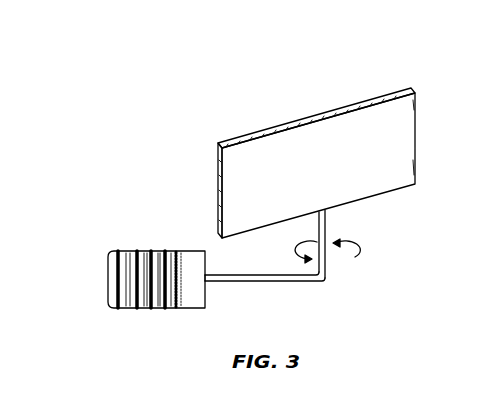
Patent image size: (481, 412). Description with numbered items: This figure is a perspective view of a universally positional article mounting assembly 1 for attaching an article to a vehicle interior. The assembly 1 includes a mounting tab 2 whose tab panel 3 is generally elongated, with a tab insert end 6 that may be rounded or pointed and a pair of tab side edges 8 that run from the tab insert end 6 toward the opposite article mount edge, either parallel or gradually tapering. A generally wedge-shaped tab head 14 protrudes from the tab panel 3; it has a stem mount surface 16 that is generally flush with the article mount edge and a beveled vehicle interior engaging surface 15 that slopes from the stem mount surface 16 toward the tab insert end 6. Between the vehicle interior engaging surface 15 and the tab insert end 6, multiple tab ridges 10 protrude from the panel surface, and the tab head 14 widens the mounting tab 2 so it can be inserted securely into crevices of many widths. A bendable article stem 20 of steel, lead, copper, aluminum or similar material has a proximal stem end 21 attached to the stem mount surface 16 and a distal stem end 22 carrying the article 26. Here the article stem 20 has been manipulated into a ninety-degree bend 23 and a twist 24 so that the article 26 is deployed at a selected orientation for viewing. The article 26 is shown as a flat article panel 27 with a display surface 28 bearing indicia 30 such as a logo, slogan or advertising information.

The assembly 1 is at (207, 78).
The mounting tab 2 is at (142, 250).
The tab panel 3 is at (118, 308).
The tab insert end 6 is at (108, 278).
The tab side edges 8 is at (163, 250).
The tab ridges 10 is at (128, 252).
The tab head 14 is at (180, 308).
The vehicle interior engaging surface 15 is at (190, 272).
The stem mount surface 16 is at (207, 307).
The article stem 20 is at (273, 281).
The proximal stem end 21 is at (220, 279).
The distal stem end 22 is at (325, 213).
The 90-degree bend 23 is at (327, 279).
The twist 24 is at (355, 257).
The article 26 is at (364, 104).
The article panel 27 is at (390, 138).
The display surface 28 is at (272, 211).
The indicia 30 is at (340, 144).